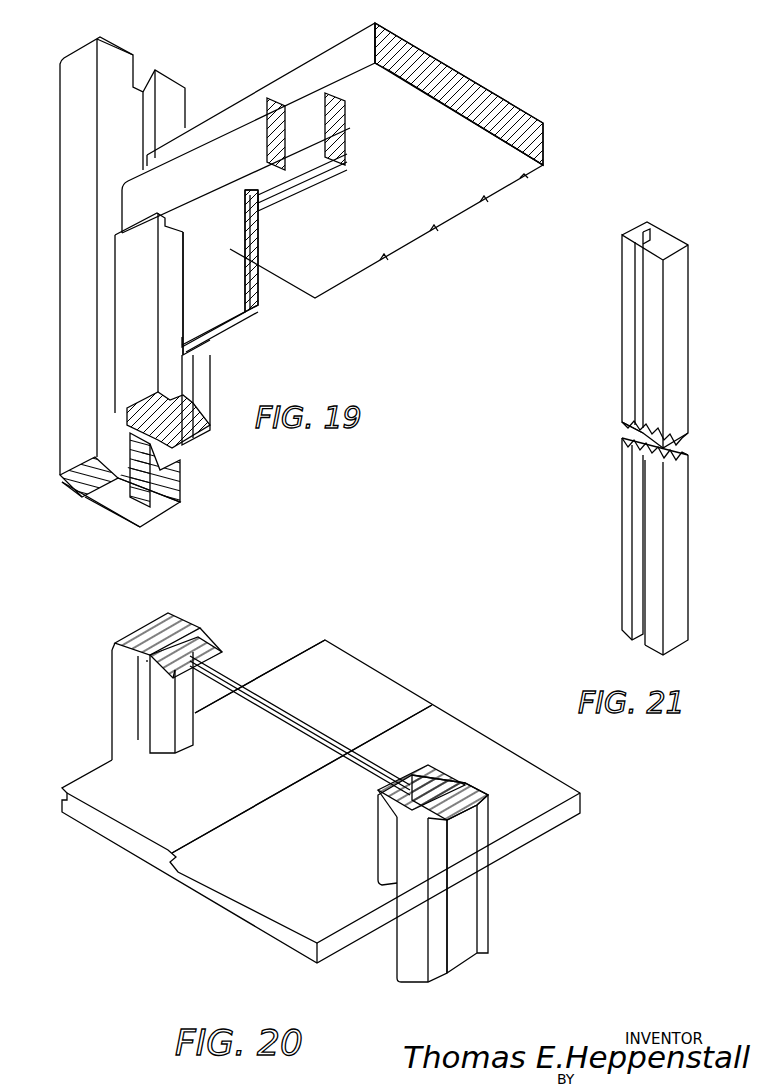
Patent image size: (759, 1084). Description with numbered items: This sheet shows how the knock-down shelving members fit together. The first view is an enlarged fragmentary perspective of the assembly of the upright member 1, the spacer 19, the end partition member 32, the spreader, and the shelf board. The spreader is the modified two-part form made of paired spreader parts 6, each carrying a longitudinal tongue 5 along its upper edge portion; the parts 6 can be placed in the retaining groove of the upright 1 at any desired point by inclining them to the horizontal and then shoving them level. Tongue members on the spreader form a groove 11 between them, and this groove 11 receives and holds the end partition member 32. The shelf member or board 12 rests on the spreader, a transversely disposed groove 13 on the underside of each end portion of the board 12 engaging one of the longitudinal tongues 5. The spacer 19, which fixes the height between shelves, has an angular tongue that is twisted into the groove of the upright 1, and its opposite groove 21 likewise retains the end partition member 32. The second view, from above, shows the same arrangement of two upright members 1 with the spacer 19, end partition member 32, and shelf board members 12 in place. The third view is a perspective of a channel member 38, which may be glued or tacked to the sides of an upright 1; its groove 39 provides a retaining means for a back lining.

In FIG. 19, the upright member 1 is at (78, 293).
In FIG. 20, the upright member 1 is at (155, 630).
In FIG. 19, the longitudinal tongue 5 is at (347, 103).
In FIG. 19, the spreader parts 6 is at (338, 112).
In FIG. 19, the groove 11 is at (310, 168).
In FIG. 19, the shelf member or board 12 is at (362, 253).
In FIG. 20, the shelf member or board 12 is at (230, 868).
In FIG. 19, the transversely disposed groove 13 is at (388, 72).
In FIG. 19, the spacer 19 is at (200, 380).
In FIG. 20, the spacer 19 is at (160, 712).
In FIG. 19, the groove 21 is at (192, 378).
In FIG. 20, the groove 21 is at (215, 650).
In FIG. 19, the end partition member 32 is at (227, 295).
In FIG. 20, the end partition member 32 is at (335, 800).
In FIG. 21, the channel member 38 is at (630, 370).
In FIG. 21, the groove 39 is at (648, 247).